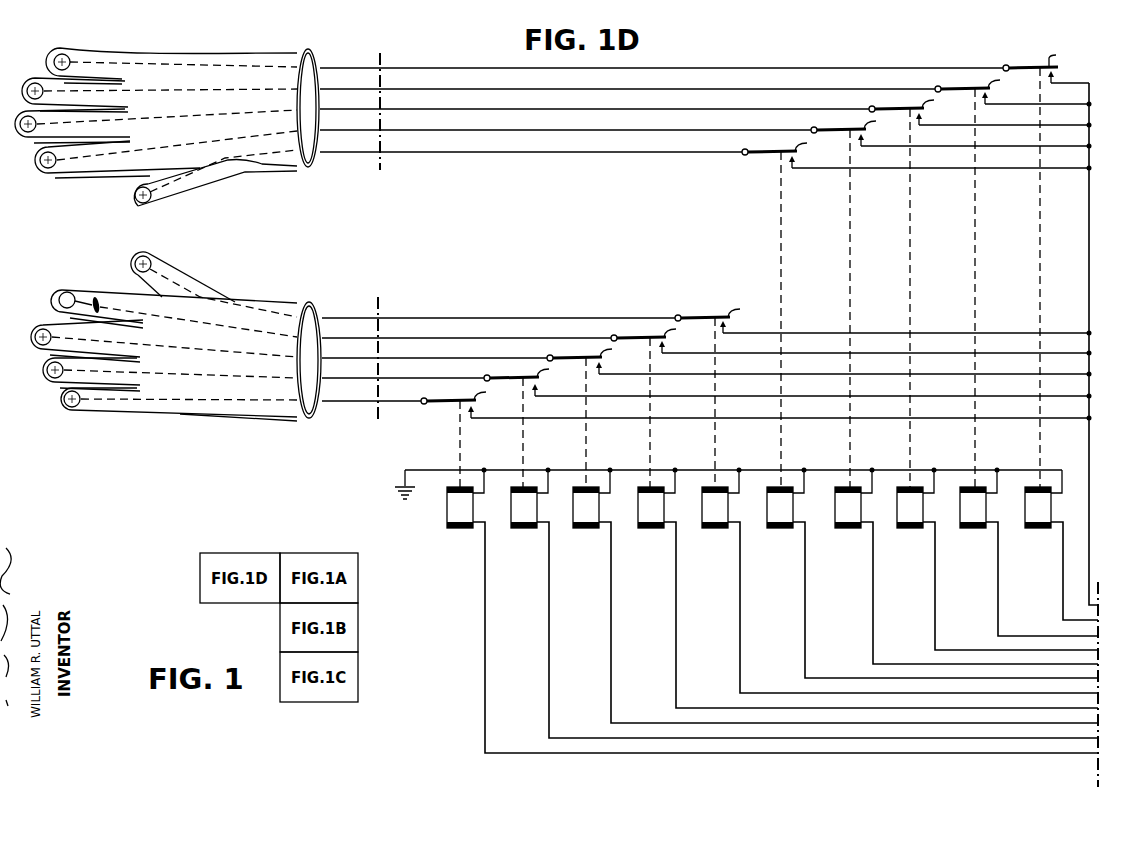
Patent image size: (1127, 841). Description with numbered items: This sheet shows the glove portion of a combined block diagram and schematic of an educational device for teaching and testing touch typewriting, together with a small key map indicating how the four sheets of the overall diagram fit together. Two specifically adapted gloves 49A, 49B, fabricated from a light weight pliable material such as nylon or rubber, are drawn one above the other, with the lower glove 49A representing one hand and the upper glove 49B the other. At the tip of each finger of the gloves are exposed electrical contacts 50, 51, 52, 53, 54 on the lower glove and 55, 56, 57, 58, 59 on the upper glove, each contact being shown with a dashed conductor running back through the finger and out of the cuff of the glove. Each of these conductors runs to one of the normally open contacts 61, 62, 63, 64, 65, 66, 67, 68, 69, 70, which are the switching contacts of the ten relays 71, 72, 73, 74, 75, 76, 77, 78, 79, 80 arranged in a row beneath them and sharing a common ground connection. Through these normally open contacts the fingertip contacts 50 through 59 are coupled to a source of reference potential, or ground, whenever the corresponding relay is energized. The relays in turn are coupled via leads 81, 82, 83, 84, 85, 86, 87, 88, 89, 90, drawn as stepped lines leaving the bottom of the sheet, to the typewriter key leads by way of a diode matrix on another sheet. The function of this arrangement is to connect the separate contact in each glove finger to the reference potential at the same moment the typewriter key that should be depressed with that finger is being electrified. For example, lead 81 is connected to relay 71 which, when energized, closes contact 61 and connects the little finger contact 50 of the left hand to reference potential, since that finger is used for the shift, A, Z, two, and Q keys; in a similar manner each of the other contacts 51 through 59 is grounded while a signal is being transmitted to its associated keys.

The glove 49A is at (293, 418).
The glove 49B is at (292, 170).
The electrical contact 50 is at (68, 410).
The electrical contact 51 is at (50, 378).
The electrical contact 52 is at (35, 343).
The electrical contact 53 is at (59, 300).
The electrical contact 54 is at (134, 264).
The electrical contact 55 is at (132, 198).
The electrical contact 56 is at (52, 170).
The electrical contact 57 is at (24, 129).
The electrical contact 58 is at (32, 91).
The electrical contact 59 is at (57, 60).
The normally open relay contact 61 is at (756, 439).
The normally open relay contact 62 is at (788, 427).
The normally open relay contact 63 is at (819, 417).
The normally open relay contact 64 is at (851, 407).
The normally open relay contact 65 is at (883, 397).
The normally open relay contact 66 is at (917, 314).
The normally open relay contact 67 is at (951, 303).
The normally open relay contact 68 is at (980, 292).
The normally open relay contact 69 is at (1013, 282).
The normally open relay contact 70 is at (1046, 263).
The relay 71 is at (473, 506).
The relay 72 is at (537, 506).
The relay 73 is at (599, 506).
The relay 74 is at (664, 506).
The relay 75 is at (728, 506).
The relay 76 is at (793, 506).
The relay 77 is at (861, 506).
The relay 78 is at (923, 506).
The relay 79 is at (986, 506).
The relay 80 is at (1051, 506).
The lead 81 is at (483, 755).
The lead 82 is at (546, 732).
The lead 83 is at (608, 717).
The lead 84 is at (673, 702).
The lead 85 is at (738, 687).
The lead 86 is at (803, 672).
The lead 87 is at (871, 658).
The lead 88 is at (934, 643).
The lead 89 is at (996, 629).
The lead 90 is at (1062, 608).